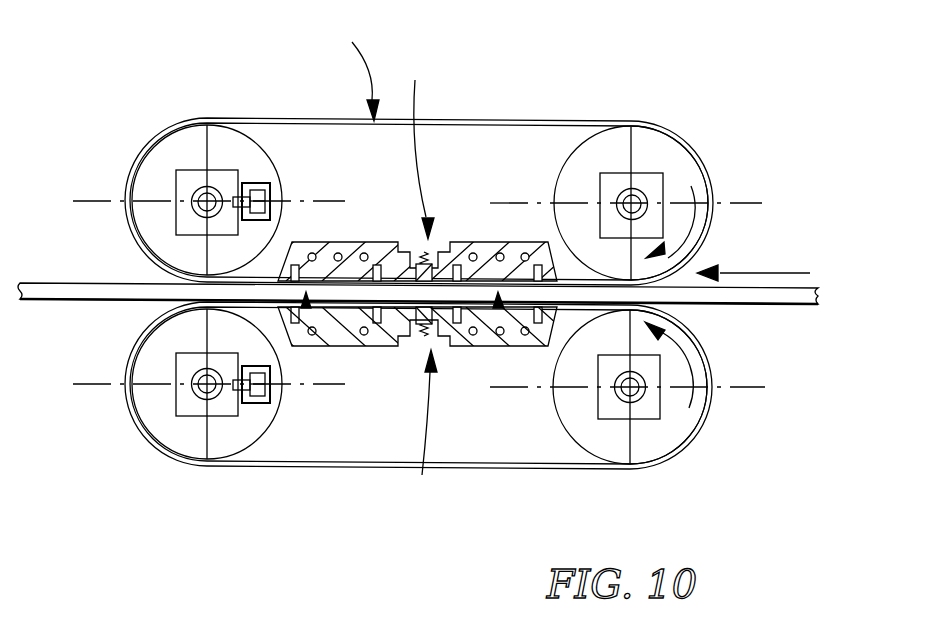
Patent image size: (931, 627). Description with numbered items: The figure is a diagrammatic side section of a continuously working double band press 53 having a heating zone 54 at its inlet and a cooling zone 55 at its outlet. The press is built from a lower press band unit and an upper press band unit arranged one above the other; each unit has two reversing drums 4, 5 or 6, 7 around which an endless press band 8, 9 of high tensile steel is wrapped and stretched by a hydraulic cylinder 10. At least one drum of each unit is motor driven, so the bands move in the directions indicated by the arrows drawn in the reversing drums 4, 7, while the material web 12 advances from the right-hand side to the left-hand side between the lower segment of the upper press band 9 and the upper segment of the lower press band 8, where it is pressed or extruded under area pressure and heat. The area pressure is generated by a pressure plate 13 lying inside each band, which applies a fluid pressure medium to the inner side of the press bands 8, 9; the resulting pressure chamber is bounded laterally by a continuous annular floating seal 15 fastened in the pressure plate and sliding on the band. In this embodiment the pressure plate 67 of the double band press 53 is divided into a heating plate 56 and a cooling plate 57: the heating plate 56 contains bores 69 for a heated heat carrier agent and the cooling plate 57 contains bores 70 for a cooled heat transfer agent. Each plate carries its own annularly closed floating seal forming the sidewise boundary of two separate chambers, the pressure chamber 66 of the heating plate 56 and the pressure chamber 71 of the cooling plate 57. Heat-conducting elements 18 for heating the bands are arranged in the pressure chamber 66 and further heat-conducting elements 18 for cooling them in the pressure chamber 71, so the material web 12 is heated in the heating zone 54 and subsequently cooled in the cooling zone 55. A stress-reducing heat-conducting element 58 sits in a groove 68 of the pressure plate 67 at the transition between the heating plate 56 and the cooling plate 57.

The reversing drum 4 is at (678, 423).
The reversing drum 5 is at (170, 430).
The reversing drum 6 is at (157, 160).
The reversing drum 7 is at (680, 170).
The lower press band 8 is at (570, 472).
The upper press band 9 is at (302, 117).
The hydraulic cylinder 10 is at (255, 183).
The material web 12 is at (748, 298).
The pressure plate 13 is at (528, 350).
The floating seal 15 is at (297, 250).
The heat-conducting element 18 is at (480, 250).
The double band press 53 is at (351, 68).
The heating zone 54 is at (508, 348).
The cooling zone 55 is at (310, 348).
The heating plate 56 is at (525, 250).
The cooling plate 57 is at (322, 248).
The heat-conducting element 58 is at (415, 350).
The pressure chamber 66 is at (460, 250).
The pressure plate 67 is at (419, 277).
The groove 68 is at (438, 248).
The bores 69 is at (500, 250).
The bores 70 is at (346, 245).
The pressure chamber 71 is at (372, 248).